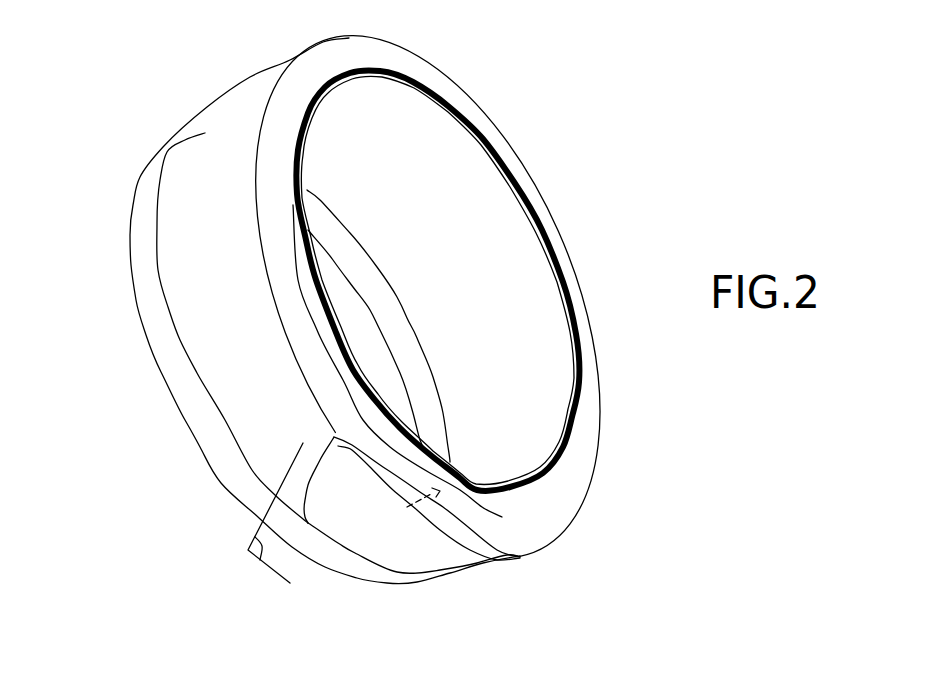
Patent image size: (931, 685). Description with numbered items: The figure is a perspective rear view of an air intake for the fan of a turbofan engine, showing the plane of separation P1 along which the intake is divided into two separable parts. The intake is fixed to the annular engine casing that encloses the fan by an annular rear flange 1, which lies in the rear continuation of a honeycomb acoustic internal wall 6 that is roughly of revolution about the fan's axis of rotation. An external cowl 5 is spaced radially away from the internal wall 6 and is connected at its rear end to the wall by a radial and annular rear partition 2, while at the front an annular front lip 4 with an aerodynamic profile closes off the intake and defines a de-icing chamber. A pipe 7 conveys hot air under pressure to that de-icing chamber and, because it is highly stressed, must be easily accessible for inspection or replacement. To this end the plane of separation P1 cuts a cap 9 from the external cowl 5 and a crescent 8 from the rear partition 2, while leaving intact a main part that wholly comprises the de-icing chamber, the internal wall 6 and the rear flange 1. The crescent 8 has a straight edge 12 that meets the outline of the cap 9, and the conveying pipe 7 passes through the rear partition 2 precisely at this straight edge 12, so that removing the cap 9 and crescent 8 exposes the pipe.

The annular rear flange 1 is at (487, 146).
The rear partition 2 is at (410, 67).
The front lip 4 is at (140, 229).
The external cowl 5 is at (205, 133).
The internal wall 6 is at (440, 219).
The pipe 7 is at (490, 514).
The crescent 8 is at (448, 523).
The cap 9 is at (350, 523).
The straight edge 12 is at (497, 538).
The plane of separation P1 is at (257, 545).